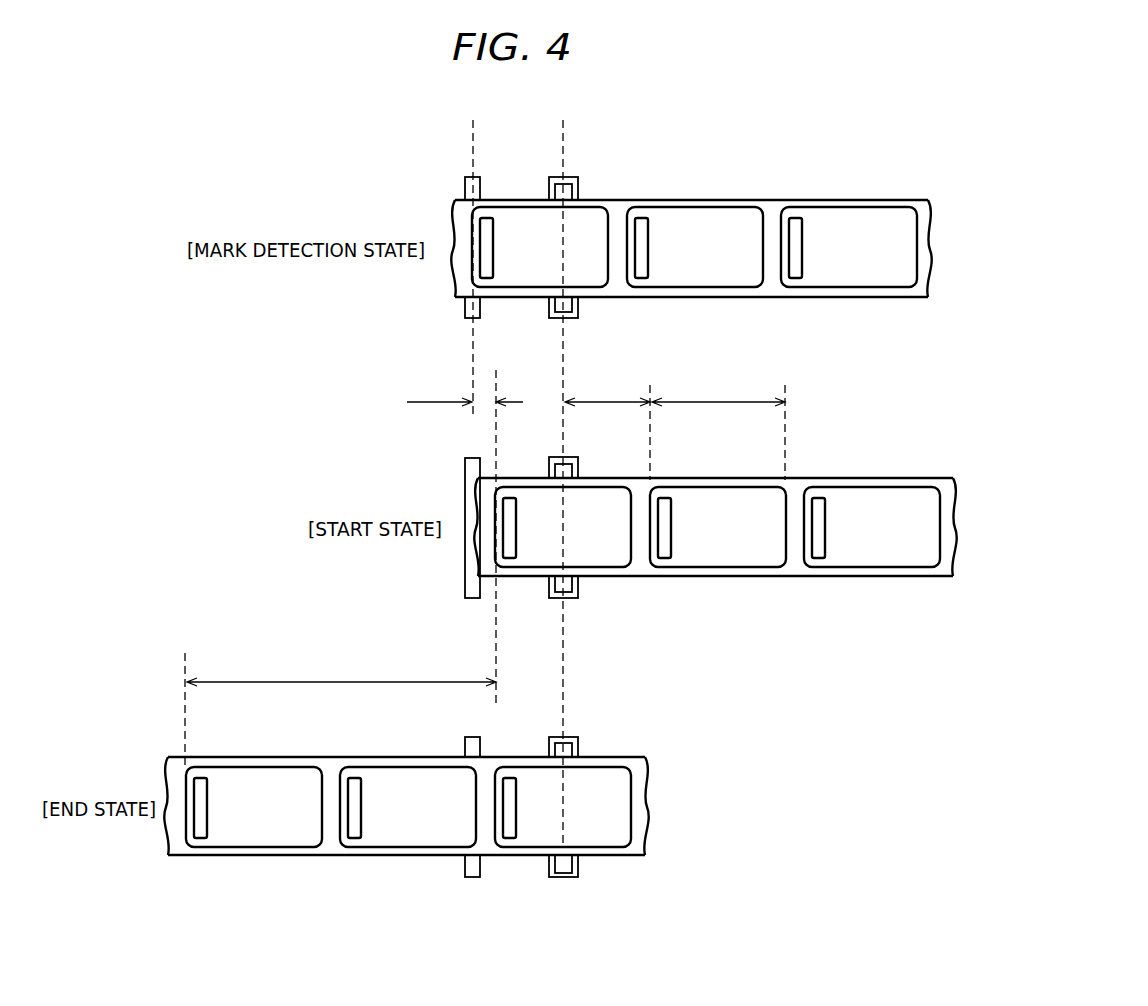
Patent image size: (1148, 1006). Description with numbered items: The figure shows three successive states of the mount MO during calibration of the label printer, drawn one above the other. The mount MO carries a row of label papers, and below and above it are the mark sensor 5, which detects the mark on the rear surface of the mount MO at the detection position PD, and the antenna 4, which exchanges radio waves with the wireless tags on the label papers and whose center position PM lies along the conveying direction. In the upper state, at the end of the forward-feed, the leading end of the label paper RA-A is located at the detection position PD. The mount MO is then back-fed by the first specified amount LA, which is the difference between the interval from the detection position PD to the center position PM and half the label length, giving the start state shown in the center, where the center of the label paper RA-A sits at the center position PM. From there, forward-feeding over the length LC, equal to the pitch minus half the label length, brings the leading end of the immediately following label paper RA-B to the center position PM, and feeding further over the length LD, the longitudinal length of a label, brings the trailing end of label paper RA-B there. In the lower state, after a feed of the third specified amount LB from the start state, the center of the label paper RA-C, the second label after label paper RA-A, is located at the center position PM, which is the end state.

The antenna 4 is at (578, 177).
The mark sensor 5 is at (468, 177).
The mount MO is at (877, 199).
The label paper RA-A is at (602, 288).
The label paper RA-B is at (738, 567).
The label paper RA-C is at (602, 847).
The detection position PD is at (471, 258).
The center position PM is at (564, 473).
The first specified amount LA is at (465, 394).
The third specified amount LB is at (341, 674).
The length LC is at (607, 394).
The length LD is at (718, 394).